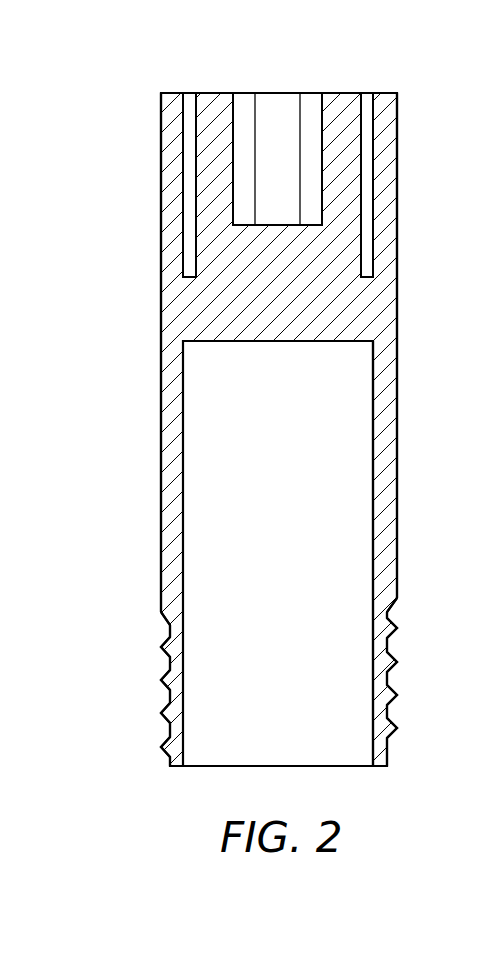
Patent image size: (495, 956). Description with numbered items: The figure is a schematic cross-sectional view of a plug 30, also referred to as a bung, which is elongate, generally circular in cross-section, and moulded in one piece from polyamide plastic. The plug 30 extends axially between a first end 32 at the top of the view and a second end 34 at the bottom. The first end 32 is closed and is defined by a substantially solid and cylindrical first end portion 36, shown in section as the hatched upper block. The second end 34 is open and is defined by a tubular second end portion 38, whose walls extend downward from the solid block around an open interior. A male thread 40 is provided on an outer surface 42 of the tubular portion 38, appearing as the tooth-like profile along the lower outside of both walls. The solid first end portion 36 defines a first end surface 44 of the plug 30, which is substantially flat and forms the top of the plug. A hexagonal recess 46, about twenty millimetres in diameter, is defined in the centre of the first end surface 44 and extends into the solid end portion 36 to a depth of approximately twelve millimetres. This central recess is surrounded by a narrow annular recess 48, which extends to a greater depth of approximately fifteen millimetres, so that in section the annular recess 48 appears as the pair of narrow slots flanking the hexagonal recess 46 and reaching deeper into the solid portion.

The plug 30 is at (148, 184).
The first end 32 is at (203, 78).
The second end 34 is at (360, 781).
The first end portion 36 is at (357, 313).
The second end portion 38 is at (385, 458).
The male thread 40 is at (396, 632).
The outer surface 42 is at (152, 432).
The first end surface 44 is at (342, 93).
The hexagonal recess 46 is at (307, 167).
The annular recess 48 is at (368, 227).